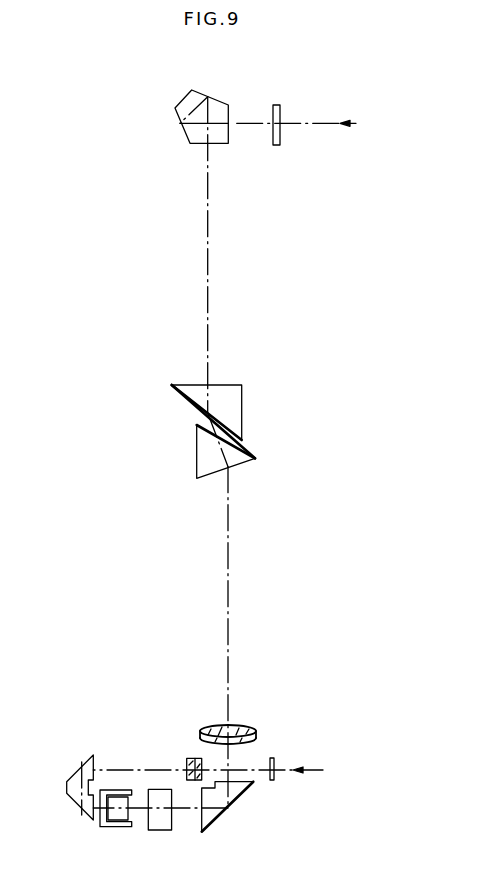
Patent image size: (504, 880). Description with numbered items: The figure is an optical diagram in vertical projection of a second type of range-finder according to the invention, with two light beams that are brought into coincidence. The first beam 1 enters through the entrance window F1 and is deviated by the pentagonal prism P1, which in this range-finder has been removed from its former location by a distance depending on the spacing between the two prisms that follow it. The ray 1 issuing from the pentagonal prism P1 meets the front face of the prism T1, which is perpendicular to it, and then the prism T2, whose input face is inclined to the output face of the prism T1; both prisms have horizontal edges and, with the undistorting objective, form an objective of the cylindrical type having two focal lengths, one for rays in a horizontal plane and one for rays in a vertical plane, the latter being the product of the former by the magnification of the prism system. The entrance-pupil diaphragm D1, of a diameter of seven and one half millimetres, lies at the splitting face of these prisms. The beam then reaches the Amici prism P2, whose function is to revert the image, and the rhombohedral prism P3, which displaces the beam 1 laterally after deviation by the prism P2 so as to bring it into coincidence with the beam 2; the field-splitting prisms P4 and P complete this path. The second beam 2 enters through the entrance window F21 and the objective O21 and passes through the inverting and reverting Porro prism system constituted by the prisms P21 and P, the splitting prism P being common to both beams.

The beam 1 is at (356, 124).
The beam 2 is at (306, 772).
The pentagonal prism P1 is at (190, 137).
The entrance window F1 is at (280, 133).
The prism T1 is at (242, 402).
The entrance-pupil diaphragm D1 is at (258, 442).
The prism T2 is at (197, 448).
The objective O21 is at (187, 761).
The entrance window F21 is at (274, 776).
The Amici prism P2 is at (237, 797).
The rhombohedral prism P3 is at (158, 830).
The splitting prism P is at (106, 828).
The field-splitting prism P4 is at (120, 823).
The Porro prism P21 is at (73, 778).